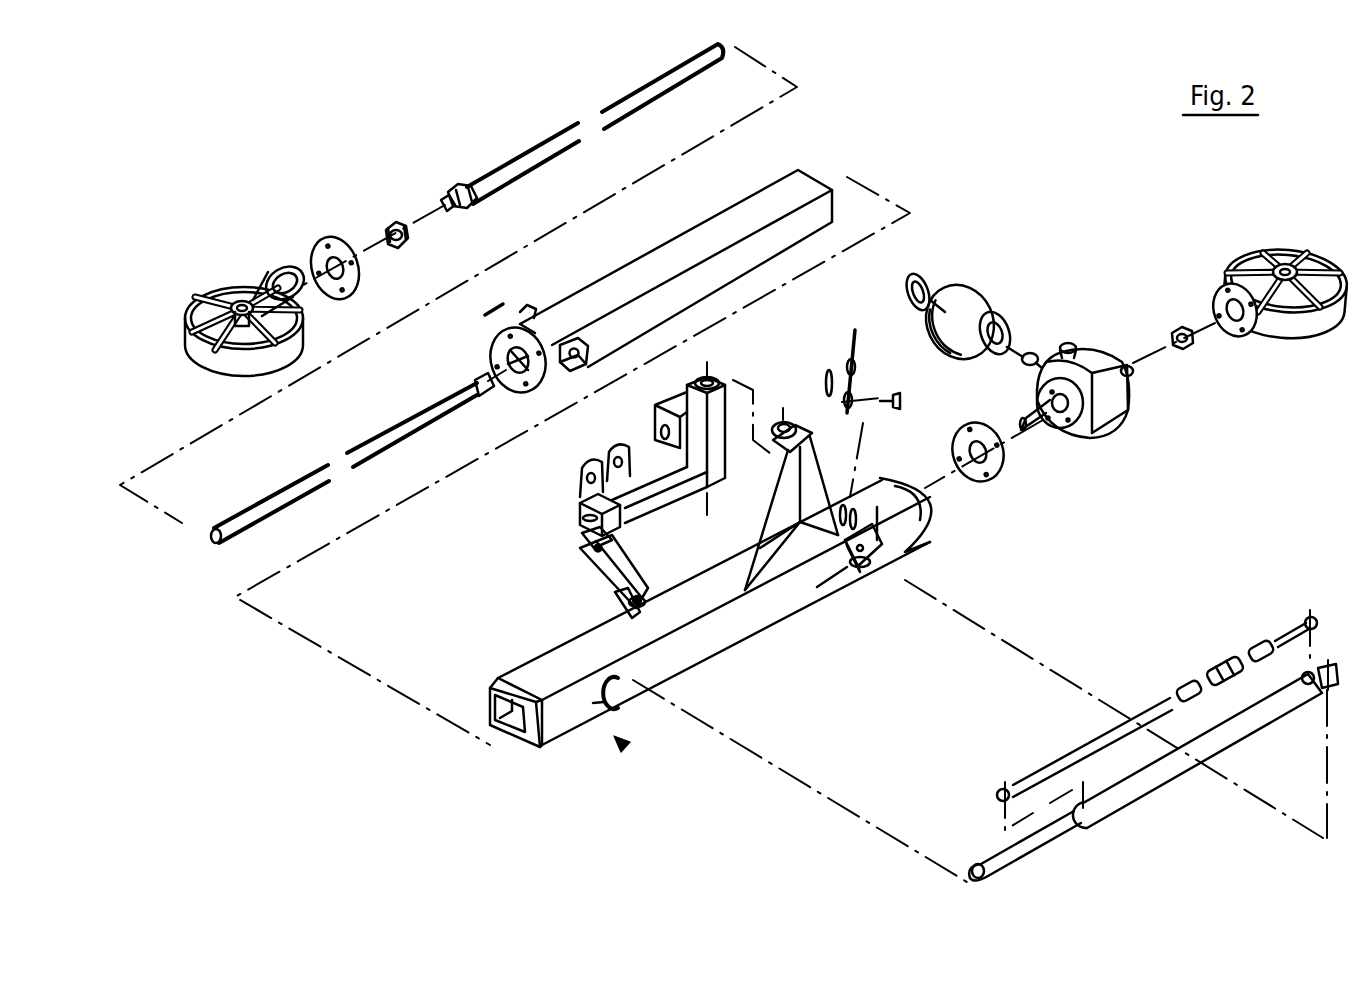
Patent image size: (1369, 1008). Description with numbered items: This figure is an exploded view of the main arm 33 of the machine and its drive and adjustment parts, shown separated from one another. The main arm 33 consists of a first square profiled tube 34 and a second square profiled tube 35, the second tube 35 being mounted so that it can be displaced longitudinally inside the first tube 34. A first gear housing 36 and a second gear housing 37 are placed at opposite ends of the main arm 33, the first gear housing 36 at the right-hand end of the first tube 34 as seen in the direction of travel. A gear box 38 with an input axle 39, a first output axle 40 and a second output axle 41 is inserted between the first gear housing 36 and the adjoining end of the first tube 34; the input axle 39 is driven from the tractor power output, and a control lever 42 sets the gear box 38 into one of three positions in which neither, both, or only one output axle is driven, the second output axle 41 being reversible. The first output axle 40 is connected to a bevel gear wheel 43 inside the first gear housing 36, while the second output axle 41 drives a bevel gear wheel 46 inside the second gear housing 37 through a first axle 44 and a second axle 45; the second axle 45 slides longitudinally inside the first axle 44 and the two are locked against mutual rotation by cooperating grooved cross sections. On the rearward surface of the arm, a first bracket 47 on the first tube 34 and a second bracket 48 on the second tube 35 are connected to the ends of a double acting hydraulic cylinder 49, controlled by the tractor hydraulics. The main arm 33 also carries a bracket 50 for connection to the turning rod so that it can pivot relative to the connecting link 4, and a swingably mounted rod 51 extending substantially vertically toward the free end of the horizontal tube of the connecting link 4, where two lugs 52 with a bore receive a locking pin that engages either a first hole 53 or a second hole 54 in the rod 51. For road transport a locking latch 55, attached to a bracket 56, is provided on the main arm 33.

The connecting link 4 is at (643, 513).
The main arm 33 is at (620, 743).
The first square profiled tube 34 is at (713, 633).
The second square profiled tube 35 is at (812, 187).
The first gear housing 36 is at (1283, 252).
The second gear housing 37 is at (200, 295).
The gear box 38 is at (1127, 413).
The input axle 39 is at (1031, 352).
The first output axle 40 is at (1128, 366).
The second output axle 41 is at (1067, 437).
The control lever 42 is at (1068, 343).
The bevel gear wheel 43 is at (1190, 350).
The first axle 44 is at (367, 447).
The second axle 45 is at (527, 155).
The bevel gear wheel 46 is at (383, 227).
The first bracket 47 is at (884, 558).
The second bracket 48 is at (580, 341).
The double acting hydraulic cylinder 49 is at (1130, 795).
The bracket 50 is at (790, 420).
The rod 51 is at (607, 577).
The lugs 52 is at (578, 513).
The first hole 53 is at (637, 596).
The second hole 54 is at (580, 540).
The locking latch 55 is at (828, 367).
The bracket 56 is at (883, 534).